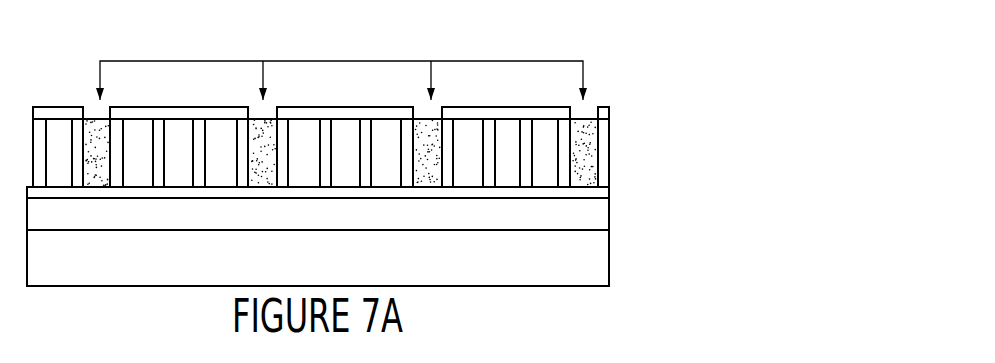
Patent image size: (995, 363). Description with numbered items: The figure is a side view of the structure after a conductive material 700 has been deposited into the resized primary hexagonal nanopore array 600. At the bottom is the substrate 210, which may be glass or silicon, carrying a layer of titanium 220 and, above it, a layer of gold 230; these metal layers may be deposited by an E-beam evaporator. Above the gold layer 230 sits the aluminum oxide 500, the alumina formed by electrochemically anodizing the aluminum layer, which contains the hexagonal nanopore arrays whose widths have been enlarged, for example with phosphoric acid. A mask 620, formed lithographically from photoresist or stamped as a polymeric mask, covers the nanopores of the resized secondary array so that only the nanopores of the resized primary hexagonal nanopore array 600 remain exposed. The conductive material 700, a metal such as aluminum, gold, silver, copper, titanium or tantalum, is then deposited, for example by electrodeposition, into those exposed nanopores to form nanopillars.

The substrate 210 is at (602, 265).
The layer of titanium 220 is at (602, 217).
The layer of gold 230 is at (600, 193).
The aluminum oxide 500 is at (609, 150).
The resized primary hexagonal nanopore array 600 is at (510, 61).
The mask 620 is at (58, 106).
The conductive material 700 is at (585, 118).